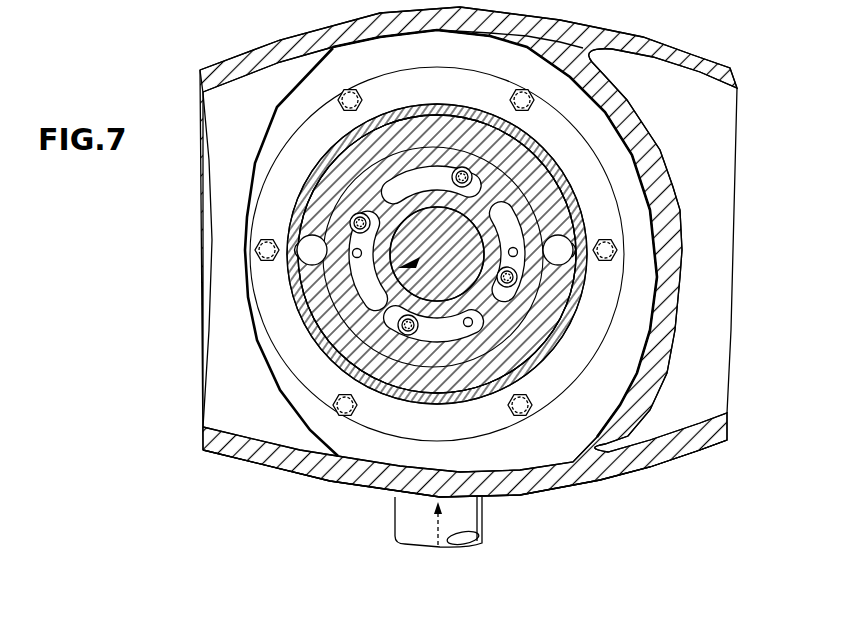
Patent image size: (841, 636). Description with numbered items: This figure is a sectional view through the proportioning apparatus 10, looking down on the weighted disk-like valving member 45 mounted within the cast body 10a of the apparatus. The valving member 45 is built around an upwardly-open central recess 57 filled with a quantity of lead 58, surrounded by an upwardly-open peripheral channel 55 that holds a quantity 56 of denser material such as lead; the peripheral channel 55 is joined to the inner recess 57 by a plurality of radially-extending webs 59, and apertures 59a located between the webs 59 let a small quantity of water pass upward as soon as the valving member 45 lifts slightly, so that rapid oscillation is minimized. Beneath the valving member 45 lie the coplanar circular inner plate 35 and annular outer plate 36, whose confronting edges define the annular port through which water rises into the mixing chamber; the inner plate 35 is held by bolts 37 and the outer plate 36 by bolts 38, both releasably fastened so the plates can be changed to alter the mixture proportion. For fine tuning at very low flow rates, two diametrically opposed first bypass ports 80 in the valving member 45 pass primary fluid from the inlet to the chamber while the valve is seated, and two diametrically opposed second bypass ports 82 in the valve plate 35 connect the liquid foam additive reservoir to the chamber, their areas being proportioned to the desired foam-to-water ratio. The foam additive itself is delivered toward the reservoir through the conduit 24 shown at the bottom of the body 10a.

The proportioning apparatus 10 is at (431, 252).
The cast body 10a is at (465, 487).
The conduit 24 is at (411, 522).
The circular inner plate 35 is at (437, 268).
The annular outer plate 36 is at (386, 254).
The bolts 37 is at (432, 203).
The bolts 38 is at (431, 260).
The valving member 45 is at (400, 254).
The peripheral channel 55 is at (510, 244).
The quantity of denser material 56 is at (353, 217).
The central recess 57 is at (394, 254).
The quantity of lead 58 is at (522, 233).
The radially-extending webs 59 is at (417, 239).
The apertures 59a is at (434, 251).
The first bypass ports 80 is at (401, 246).
The second bypass ports 82 is at (402, 247).